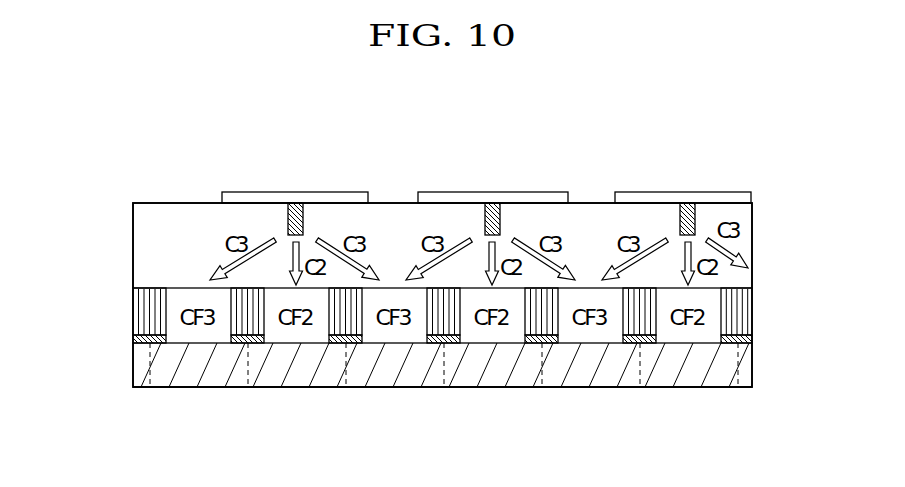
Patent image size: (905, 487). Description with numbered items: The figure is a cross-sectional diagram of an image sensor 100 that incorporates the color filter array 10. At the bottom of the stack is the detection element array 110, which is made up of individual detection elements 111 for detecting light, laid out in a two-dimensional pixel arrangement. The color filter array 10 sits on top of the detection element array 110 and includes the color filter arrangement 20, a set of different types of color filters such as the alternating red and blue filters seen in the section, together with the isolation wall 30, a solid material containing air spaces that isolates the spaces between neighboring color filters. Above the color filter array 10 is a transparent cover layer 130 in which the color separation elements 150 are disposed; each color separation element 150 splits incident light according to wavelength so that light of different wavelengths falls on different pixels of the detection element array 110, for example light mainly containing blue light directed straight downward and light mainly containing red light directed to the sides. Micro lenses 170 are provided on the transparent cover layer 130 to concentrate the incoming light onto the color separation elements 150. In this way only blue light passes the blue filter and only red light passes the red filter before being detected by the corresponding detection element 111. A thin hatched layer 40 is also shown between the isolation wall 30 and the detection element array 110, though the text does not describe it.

The image sensor 100 is at (110, 270).
The transparent cover layer 130 is at (753, 250).
The micro lens 170 is at (333, 193).
The color separation element 150 is at (493, 203).
The color filter array 10 is at (462, 319).
The isolation wall 30 is at (753, 312).
The reflective layer 40 is at (753, 340).
The detection element array 110 is at (762, 368).
The color filter arrangement 20 is at (681, 352).
The detection element 111 is at (698, 381).